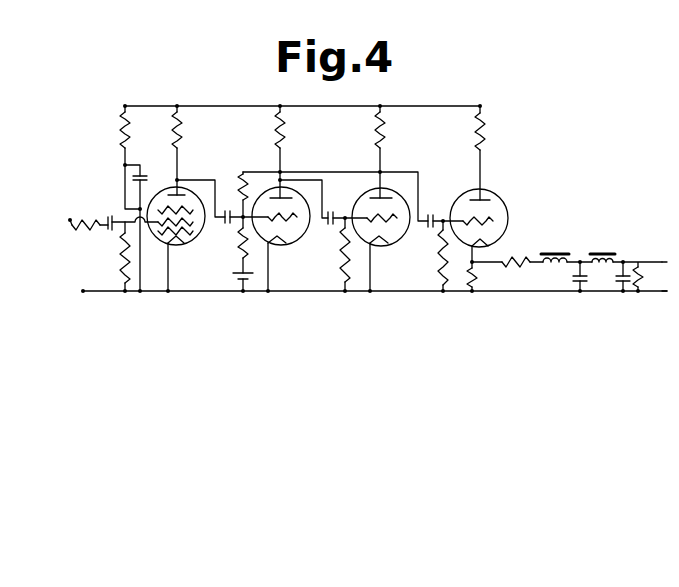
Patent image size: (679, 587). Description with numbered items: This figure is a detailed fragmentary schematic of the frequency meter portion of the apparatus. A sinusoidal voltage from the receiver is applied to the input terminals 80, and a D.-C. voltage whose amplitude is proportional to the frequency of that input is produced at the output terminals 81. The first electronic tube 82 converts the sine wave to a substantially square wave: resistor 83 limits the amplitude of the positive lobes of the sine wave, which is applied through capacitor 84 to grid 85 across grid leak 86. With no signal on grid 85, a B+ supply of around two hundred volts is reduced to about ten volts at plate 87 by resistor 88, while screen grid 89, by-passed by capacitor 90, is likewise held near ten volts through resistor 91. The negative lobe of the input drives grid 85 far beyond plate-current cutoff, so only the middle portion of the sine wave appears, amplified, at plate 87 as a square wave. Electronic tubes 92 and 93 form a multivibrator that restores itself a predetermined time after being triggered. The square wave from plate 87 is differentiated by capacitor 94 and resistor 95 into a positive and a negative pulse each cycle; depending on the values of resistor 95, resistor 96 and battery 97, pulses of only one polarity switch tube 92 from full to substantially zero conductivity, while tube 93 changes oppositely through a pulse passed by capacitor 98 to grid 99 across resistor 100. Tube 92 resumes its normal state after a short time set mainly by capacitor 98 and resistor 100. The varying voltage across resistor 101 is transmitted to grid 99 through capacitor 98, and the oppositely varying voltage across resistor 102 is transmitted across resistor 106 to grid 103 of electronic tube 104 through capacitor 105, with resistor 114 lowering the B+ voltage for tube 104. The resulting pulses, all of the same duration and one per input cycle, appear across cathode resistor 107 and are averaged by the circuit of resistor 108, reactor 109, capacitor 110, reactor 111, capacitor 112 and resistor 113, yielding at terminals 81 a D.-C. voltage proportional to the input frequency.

The input terminals 80 is at (68, 220).
The output terminals 81 is at (662, 262).
The electronic tube 82 is at (166, 237).
The resistor 83 is at (89, 238).
The capacitor 84 is at (109, 216).
The grid 85 is at (202, 241).
The grid leak 86 is at (121, 262).
The plate 87 is at (181, 194).
The resistor 88 is at (182, 130).
The screen grid 89 is at (191, 232).
The capacitor 90 is at (158, 164).
The resistor 91 is at (119, 133).
The electronic tube 92 is at (300, 240).
The electronic tube 93 is at (401, 244).
The capacitor 94 is at (233, 204).
The resistor 95 is at (237, 250).
The resistor 96 is at (240, 181).
The battery 97 is at (228, 278).
The capacitor 98 is at (331, 211).
The grid 99 is at (397, 220).
The resistor 100 is at (339, 275).
The resistor 101 is at (285, 129).
The resistor 102 is at (385, 129).
The grid 103 is at (490, 220).
The electronic tube 104 is at (496, 200).
The capacitor 105 is at (431, 212).
The resistor 106 is at (437, 280).
The cathode resistor 107 is at (478, 280).
The resistor 108 is at (520, 257).
The reactor 109 is at (565, 242).
The capacitor 110 is at (571, 282).
The reactor 111 is at (599, 251).
The capacitor 112 is at (619, 280).
The resistor 113 is at (641, 275).
The resistor 114 is at (486, 132).